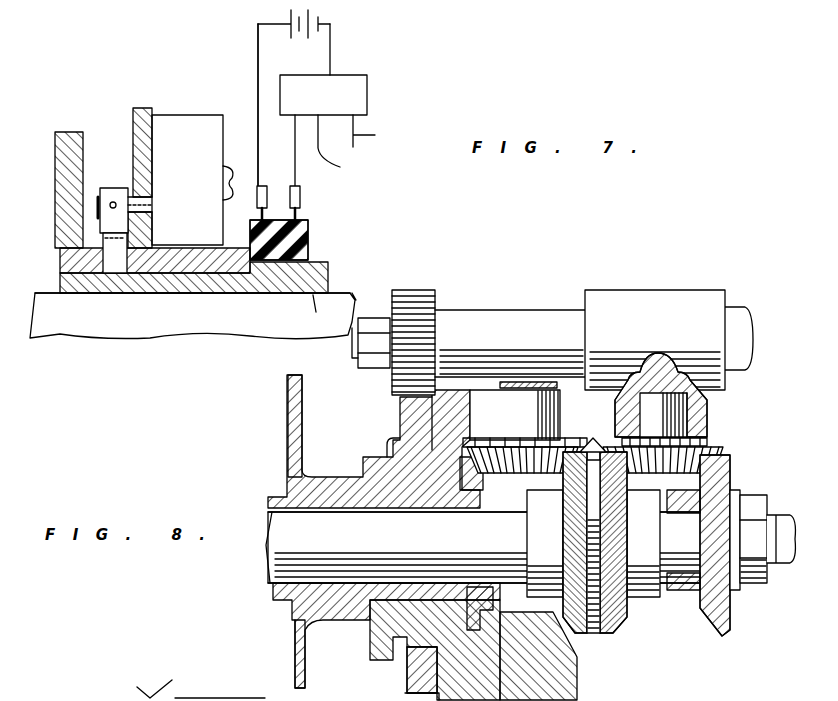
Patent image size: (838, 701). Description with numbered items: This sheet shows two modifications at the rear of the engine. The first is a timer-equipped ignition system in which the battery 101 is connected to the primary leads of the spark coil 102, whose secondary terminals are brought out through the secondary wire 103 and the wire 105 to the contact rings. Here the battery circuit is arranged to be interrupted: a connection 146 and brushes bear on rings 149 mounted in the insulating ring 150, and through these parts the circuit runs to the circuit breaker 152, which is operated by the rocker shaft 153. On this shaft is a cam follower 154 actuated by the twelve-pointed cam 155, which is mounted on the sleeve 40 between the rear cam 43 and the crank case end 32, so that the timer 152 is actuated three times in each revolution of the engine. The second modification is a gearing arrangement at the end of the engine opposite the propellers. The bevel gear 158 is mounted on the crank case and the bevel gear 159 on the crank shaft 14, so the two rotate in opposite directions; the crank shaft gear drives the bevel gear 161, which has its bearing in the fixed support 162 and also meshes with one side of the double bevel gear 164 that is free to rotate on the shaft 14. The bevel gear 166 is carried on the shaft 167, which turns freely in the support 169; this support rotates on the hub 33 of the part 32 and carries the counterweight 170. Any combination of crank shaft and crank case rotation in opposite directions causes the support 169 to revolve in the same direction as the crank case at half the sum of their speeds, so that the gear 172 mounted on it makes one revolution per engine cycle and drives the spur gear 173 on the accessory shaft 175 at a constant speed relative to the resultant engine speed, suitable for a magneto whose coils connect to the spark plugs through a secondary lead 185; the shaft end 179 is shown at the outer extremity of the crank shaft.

In FIG. 7, the crank shaft 14 is at (207, 323).
In FIG. 8, the crank shaft 14 is at (397, 532).
In FIG. 7, the crank case end 32 is at (133, 126).
In FIG. 8, the crank case end 32 is at (290, 418).
In FIG. 7, the hub 33 is at (92, 291).
In FIG. 7, the sleeve 40 is at (60, 264).
In FIG. 7, the rear cam 43 is at (60, 183).
In FIG. 7, the battery 101 is at (322, 14).
In FIG. 7, the spark coil 102 is at (342, 80).
In FIG. 7, the secondary wire 103 is at (345, 146).
In FIG. 7, the wire 105 is at (380, 131).
In FIG. 7, the lead wire 146 is at (262, 186).
In FIG. 7, the rings 149 is at (300, 212).
In FIG. 7, the insulating ring 150 is at (308, 240).
In FIG. 7, the circuit breaker 152 is at (195, 180).
In FIG. 7, the rocker shaft 153 is at (97, 197).
In FIG. 7, the cam follower 154 is at (152, 205).
In FIG. 7, the cam 155 is at (120, 228).
In FIG. 8, the bevel gear 158 is at (540, 575).
In FIG. 8, the bevel gear 159 is at (725, 465).
In FIG. 8, the bevel gear 161 is at (710, 440).
In FIG. 8, the fixed support 162 is at (708, 410).
In FIG. 8, the double bevel gear 164 is at (597, 637).
In FIG. 8, the bevel gear 166 is at (572, 445).
In FIG. 8, the shaft 167 is at (587, 361).
In FIG. 8, the support 169 is at (392, 447).
In FIG. 8, the counterweight 170 is at (568, 686).
In FIG. 8, the gear 172 is at (410, 678).
In FIG. 8, the spur gear 173 is at (435, 294).
In FIG. 8, the accessory shaft 175 is at (517, 332).
In FIG. 8, the shaft end 179 is at (790, 567).
In FIG. 8, the secondary lead 185 is at (158, 697).